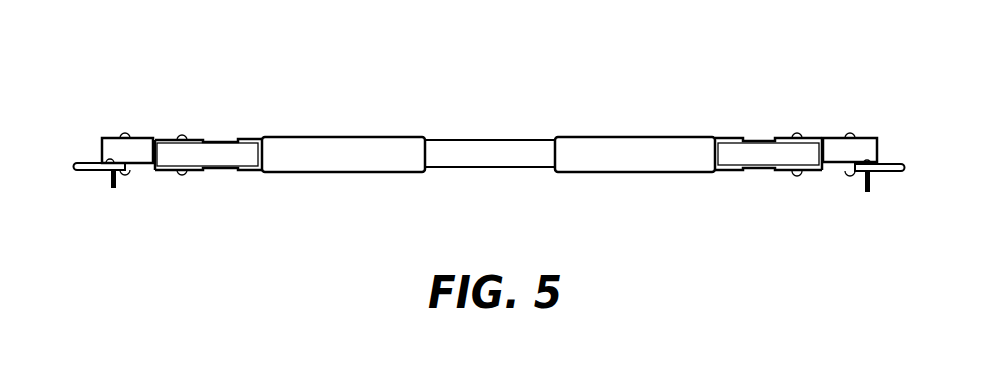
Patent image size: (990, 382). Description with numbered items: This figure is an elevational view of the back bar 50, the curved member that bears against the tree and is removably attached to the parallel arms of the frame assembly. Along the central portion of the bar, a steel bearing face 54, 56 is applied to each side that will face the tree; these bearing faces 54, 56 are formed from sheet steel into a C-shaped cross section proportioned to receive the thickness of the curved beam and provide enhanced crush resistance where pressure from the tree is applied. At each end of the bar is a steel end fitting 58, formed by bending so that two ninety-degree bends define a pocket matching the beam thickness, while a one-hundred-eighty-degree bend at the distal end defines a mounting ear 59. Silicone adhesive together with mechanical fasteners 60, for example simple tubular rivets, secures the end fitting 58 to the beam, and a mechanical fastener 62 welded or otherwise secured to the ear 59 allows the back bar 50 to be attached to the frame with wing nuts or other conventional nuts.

The back bar 50 is at (462, 133).
The steel bearing face 54 is at (340, 160).
The steel bearing face 56 is at (625, 160).
The end fitting 58 is at (867, 150).
The mounting ear 59 is at (898, 172).
The mechanical fasteners 60 is at (853, 134).
The mechanical fastener 62 is at (862, 182).